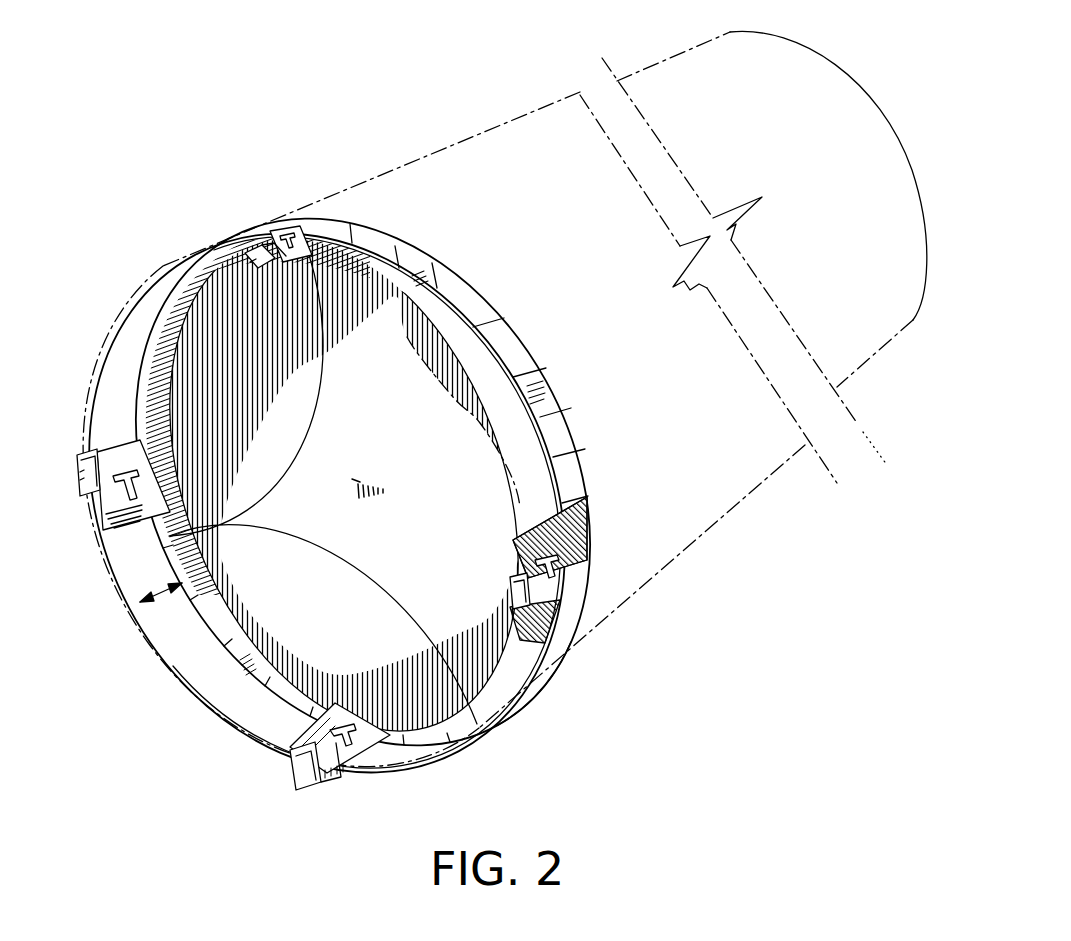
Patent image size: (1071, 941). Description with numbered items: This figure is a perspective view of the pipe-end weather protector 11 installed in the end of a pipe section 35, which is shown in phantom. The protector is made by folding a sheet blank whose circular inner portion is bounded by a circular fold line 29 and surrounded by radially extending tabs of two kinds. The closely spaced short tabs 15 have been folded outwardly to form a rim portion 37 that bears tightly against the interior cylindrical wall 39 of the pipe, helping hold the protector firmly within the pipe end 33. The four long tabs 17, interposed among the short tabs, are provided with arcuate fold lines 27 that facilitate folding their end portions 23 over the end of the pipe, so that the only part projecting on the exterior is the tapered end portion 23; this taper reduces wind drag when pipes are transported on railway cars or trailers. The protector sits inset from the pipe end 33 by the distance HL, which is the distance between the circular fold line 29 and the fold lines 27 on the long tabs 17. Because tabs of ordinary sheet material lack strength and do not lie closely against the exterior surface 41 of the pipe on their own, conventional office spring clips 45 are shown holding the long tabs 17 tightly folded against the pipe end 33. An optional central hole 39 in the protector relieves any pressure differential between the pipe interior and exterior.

The weather protector 11 is at (344, 497).
The short tabs 15 is at (530, 385).
The long tabs 17 is at (359, 434).
The end portion of long tab 23 is at (573, 570).
The arcuate fold lines 27 is at (86, 533).
The circular fold line 29 is at (223, 640).
The pipe end 33 is at (152, 302).
The pipe section 35 is at (445, 138).
The rim portion 37 is at (270, 770).
The interior cylindrical wall / central circular hole 39 is at (356, 480).
The exterior surface of pipe 41 is at (566, 650).
The office spring clips 45 is at (310, 768).
The inset distance HL is at (160, 607).